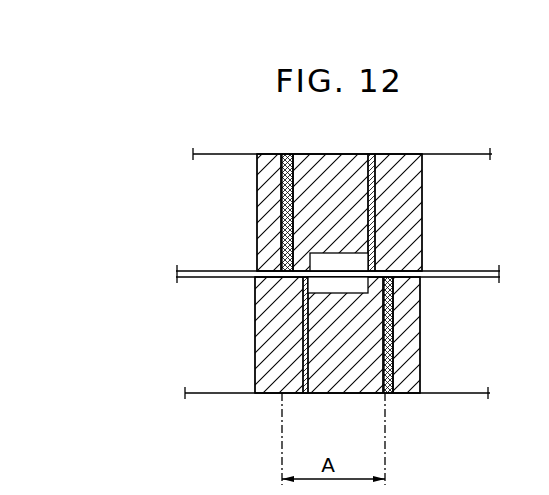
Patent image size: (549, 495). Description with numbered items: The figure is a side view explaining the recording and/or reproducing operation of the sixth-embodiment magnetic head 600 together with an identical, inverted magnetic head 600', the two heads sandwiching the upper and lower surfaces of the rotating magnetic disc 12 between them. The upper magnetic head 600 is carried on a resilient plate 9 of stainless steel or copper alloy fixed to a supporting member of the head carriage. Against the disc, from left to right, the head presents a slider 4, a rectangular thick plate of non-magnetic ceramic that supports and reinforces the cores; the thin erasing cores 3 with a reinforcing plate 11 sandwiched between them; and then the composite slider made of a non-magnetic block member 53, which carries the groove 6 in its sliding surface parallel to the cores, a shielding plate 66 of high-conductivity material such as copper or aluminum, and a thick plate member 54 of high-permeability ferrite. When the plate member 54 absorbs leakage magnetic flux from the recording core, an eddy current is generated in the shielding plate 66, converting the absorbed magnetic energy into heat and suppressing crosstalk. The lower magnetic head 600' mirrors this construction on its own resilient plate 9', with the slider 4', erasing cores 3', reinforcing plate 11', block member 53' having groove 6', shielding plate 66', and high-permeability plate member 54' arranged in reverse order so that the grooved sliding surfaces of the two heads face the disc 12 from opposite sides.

The slider 4 is at (251, 196).
The erasing core 3 is at (277, 194).
The reinforcing plate 11 is at (299, 194).
The block member 53 is at (330, 193).
The plate member 54 is at (398, 193).
The resilient plate 9 is at (342, 138).
The magnetic head 600 is at (308, 212).
The shielding plate 66 is at (415, 212).
The groove 6 is at (381, 246).
The magnetic disc 12 is at (204, 268).
The plate member 54' is at (239, 335).
The groove 6' is at (295, 302).
The shielding plate 66' is at (258, 335).
The magnetic head 600' is at (371, 335).
The block member 53' is at (336, 356).
The reinforcing plate 11' is at (366, 356).
The erasing core 3' is at (400, 355).
The slider 4' is at (425, 356).
The resilient plate 9' is at (340, 414).